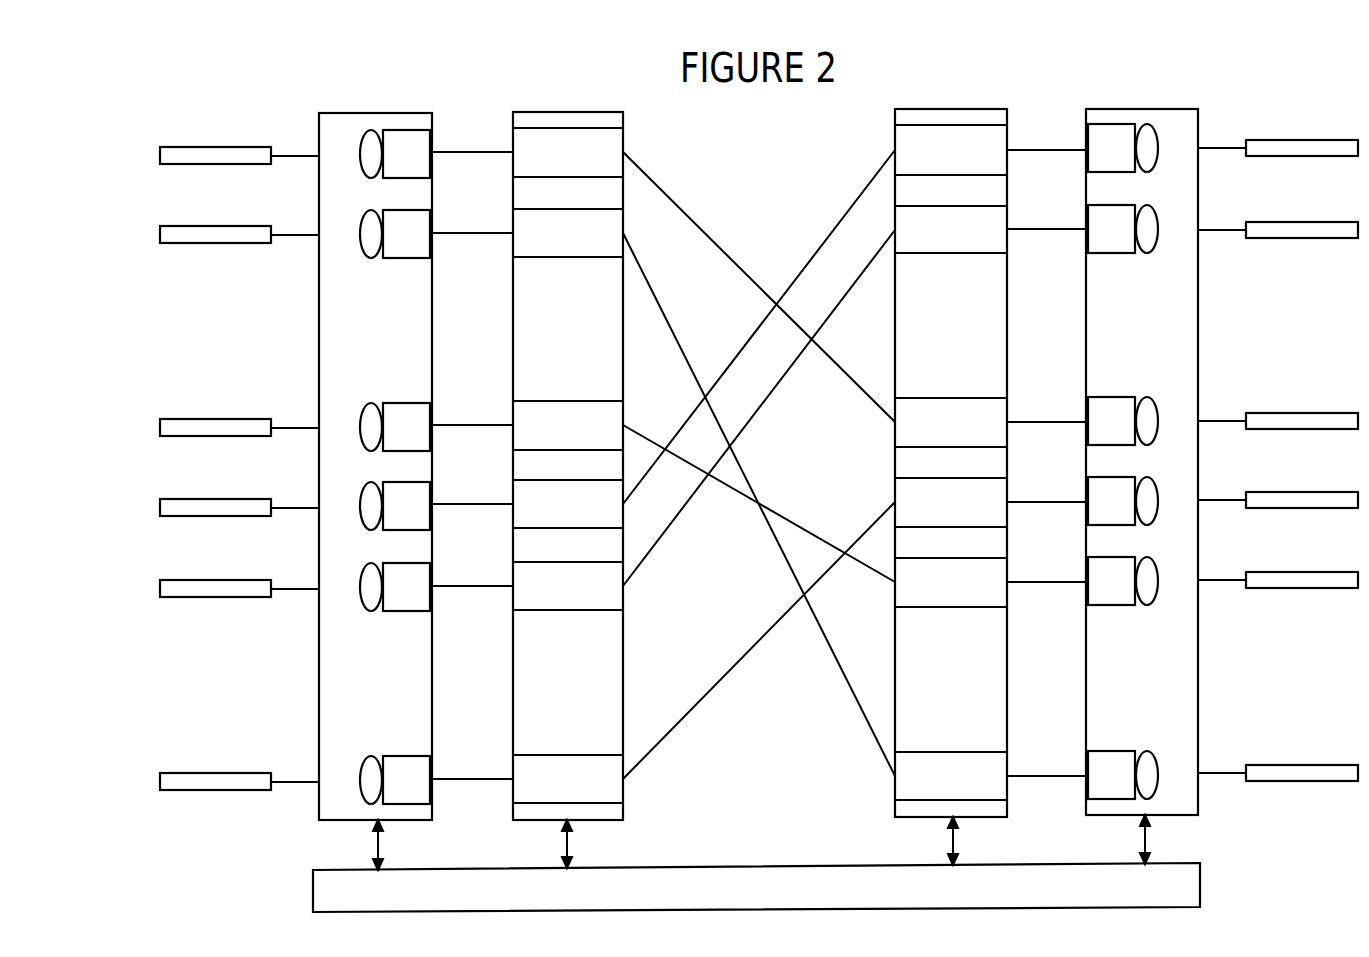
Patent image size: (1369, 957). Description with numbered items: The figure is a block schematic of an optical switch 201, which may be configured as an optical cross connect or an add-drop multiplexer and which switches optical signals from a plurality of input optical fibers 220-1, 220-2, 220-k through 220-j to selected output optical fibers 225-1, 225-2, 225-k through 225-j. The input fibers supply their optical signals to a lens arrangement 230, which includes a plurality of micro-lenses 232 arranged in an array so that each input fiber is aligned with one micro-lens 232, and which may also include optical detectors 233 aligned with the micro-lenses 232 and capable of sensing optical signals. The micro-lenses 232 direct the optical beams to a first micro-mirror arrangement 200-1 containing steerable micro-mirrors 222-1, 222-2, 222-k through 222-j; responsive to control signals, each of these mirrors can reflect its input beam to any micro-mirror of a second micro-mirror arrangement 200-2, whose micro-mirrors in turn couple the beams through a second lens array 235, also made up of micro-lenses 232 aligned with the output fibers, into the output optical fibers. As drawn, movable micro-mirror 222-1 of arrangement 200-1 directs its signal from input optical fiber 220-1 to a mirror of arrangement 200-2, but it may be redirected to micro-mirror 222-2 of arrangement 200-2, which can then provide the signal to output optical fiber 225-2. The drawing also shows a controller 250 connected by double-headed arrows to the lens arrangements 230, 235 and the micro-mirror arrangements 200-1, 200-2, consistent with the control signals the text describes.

The optical switch 201 is at (228, 95).
The input optical fiber 220-1 is at (222, 147).
The input optical fiber 220-2 is at (222, 226).
The input optical fiber 220-k is at (222, 499).
The input optical fiber 220-j is at (225, 773).
The output optical fiber 225-1 is at (1256, 140).
The output optical fiber 225-2 is at (1261, 222).
The output optical fiber 225-k is at (1262, 492).
The output optical fiber 225-j is at (1266, 765).
The lens arrangement 230 is at (380, 112).
The micro-lens 232 is at (360, 230).
The optical detector 233 is at (759, 464).
The second lens array 235 is at (1105, 109).
The first micro-mirror arrangement 200-1 is at (558, 112).
The second micro-mirror arrangement 200-2 is at (917, 108).
The movable micro-mirror 222-1 is at (759, 151).
The movable micro-mirror 222-2 is at (759, 231).
The micro-mirror 222-k is at (759, 503).
The micro-mirror 222-j is at (759, 777).
The controller 250 is at (756, 863).